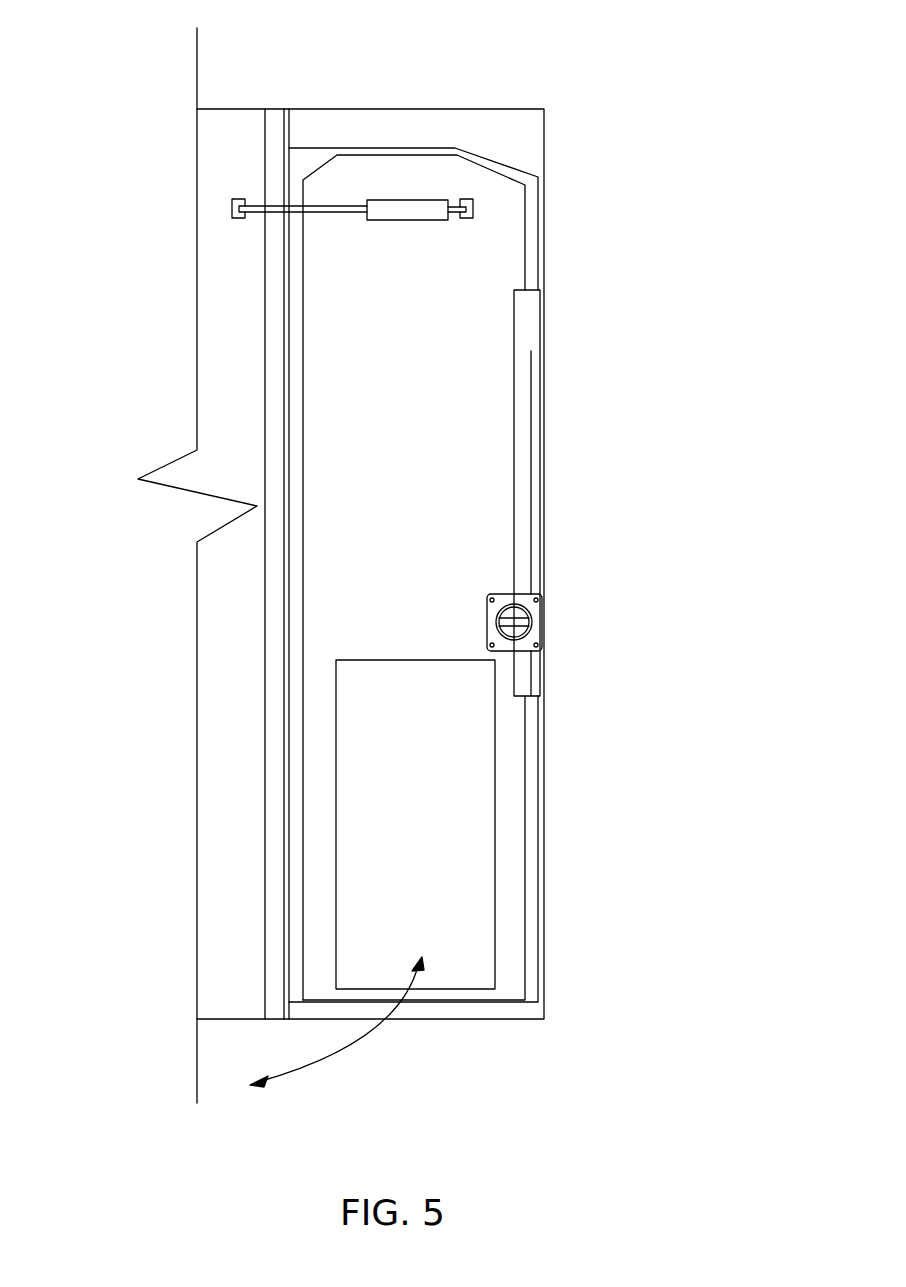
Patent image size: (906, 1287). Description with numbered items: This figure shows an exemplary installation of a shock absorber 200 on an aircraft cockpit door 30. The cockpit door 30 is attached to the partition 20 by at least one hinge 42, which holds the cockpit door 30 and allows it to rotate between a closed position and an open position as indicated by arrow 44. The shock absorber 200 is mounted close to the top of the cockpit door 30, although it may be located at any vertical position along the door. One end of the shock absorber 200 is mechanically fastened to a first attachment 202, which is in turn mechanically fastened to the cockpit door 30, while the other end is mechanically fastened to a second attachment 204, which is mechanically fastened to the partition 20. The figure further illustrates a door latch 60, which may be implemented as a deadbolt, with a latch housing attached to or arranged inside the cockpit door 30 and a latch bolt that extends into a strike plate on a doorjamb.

The partition 20 is at (232, 409).
The cockpit door 30 is at (440, 497).
The hinge 42 is at (288, 634).
The arrow 44 is at (337, 1023).
The door latch 60 is at (535, 612).
The shock absorber 200 is at (422, 211).
The first attachment 202 is at (475, 210).
The second attachment 204 is at (233, 208).